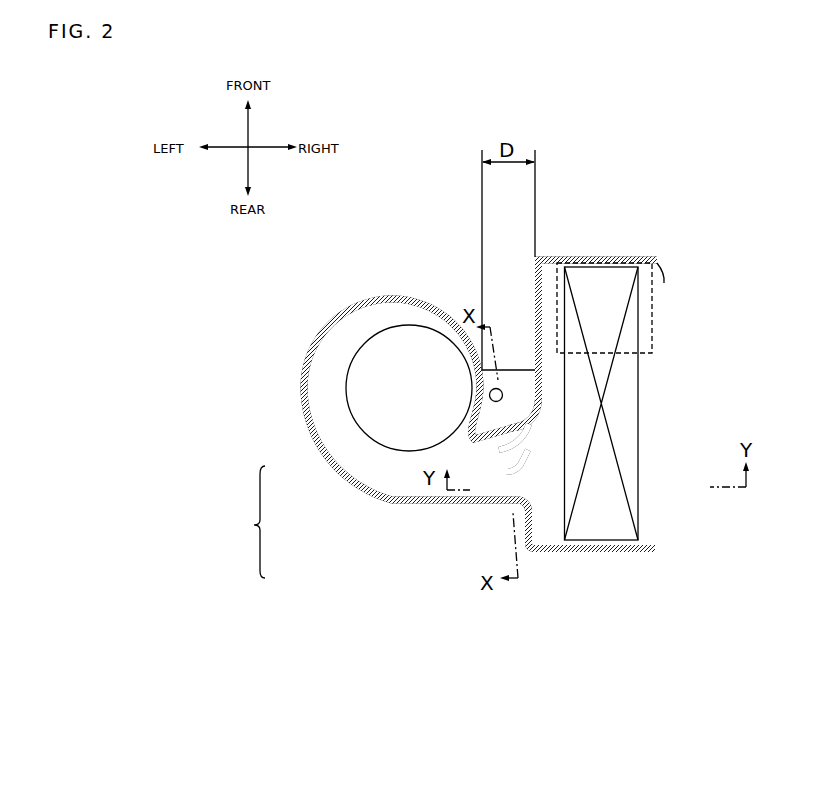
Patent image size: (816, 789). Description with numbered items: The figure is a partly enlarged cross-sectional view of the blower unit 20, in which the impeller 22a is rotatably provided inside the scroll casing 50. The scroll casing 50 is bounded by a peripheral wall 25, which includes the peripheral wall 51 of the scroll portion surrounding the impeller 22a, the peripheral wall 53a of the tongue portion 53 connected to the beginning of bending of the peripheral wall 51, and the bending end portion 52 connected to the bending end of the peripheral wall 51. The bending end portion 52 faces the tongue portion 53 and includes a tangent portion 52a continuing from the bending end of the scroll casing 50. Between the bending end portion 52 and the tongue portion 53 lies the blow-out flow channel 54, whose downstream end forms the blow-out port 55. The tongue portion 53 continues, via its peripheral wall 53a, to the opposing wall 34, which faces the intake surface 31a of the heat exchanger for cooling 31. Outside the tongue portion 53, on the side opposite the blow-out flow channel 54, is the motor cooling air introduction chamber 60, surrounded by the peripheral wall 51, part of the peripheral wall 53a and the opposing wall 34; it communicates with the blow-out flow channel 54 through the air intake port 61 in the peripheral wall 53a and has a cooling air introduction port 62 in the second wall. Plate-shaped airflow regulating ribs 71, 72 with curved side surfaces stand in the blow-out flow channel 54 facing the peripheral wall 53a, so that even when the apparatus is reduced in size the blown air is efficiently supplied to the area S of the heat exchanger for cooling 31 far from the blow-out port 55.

The blower unit 20 is at (333, 309).
The impeller 22a is at (402, 326).
The peripheral wall 25 is at (244, 522).
The heat exchanger for cooling 31 is at (608, 541).
The intake surface 31a is at (563, 524).
The opposing wall 34 is at (534, 264).
The scroll casing 50 is at (296, 381).
The peripheral wall of scroll portion 51 is at (320, 452).
The bending end portion 52 is at (440, 503).
The tangent portion 52a is at (463, 502).
The tongue portion 53 is at (463, 440).
The peripheral wall of tongue portion 53a is at (488, 441).
The blow-out flow channel 54 is at (503, 478).
The blow-out port 55 is at (538, 493).
The motor cooling air introduction chamber 60 is at (520, 368).
The air intake port 61 is at (543, 400).
The cooling air introduction port 62 is at (504, 392).
The airflow regulating rib 71 is at (535, 431).
The airflow regulating rib 72 is at (532, 455).
The area S is at (653, 303).